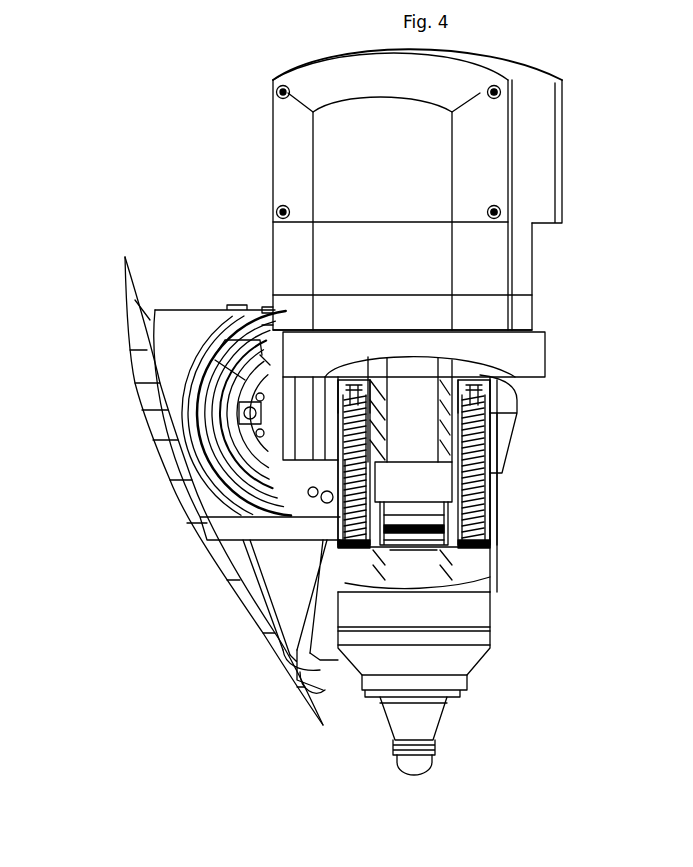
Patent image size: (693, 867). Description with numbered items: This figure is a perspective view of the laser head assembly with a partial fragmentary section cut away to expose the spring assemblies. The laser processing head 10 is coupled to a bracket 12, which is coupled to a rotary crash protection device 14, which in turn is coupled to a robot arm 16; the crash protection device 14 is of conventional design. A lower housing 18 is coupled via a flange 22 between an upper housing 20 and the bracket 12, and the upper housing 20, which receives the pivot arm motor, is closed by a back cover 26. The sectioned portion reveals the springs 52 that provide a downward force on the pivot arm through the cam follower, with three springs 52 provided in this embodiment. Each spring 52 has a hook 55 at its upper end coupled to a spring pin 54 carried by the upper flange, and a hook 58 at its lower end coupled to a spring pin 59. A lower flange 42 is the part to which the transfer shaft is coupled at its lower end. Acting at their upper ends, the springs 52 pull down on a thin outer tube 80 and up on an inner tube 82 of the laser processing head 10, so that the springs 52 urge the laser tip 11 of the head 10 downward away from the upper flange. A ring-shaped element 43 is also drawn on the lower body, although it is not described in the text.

The laser processing head 10 is at (497, 593).
The laser tip 11 is at (423, 775).
The bracket 12 is at (550, 357).
The rotary crash protection device 14 is at (227, 435).
The robot arm 16 is at (203, 297).
The lower housing 18 is at (517, 442).
The upper housing 20 is at (545, 231).
The flange 22 is at (517, 307).
The back cover 26 is at (558, 150).
The lower flange 42 is at (490, 394).
The retaining ring 43 is at (473, 613).
The springs 52 is at (490, 483).
The spring pins 54 is at (460, 385).
The hooks 55 is at (350, 393).
The hooks 58 is at (337, 545).
The spring pins 59 is at (490, 547).
The thin outer tube 80 is at (497, 524).
The inner tube 82 is at (380, 508).